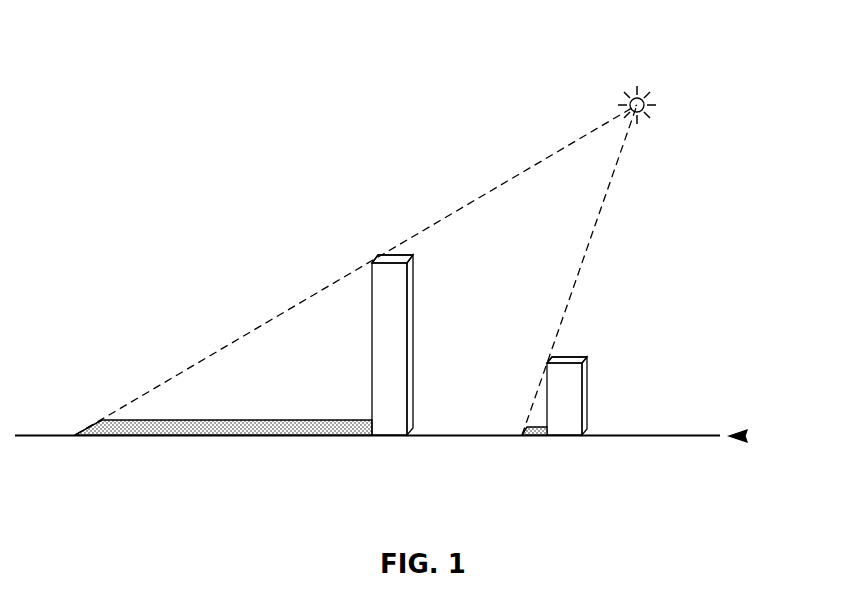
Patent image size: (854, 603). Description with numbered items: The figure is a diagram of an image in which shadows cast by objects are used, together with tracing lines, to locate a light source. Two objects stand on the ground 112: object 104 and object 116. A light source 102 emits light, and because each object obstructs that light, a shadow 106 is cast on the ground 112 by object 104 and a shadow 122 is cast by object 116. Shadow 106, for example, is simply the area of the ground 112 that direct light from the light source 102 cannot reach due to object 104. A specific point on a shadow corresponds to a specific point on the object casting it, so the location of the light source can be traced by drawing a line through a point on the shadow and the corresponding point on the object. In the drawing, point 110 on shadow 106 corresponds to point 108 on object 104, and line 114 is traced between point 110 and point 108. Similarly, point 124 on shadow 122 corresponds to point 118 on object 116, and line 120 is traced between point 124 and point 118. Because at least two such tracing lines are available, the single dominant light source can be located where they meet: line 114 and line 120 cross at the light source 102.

The light source 102 is at (642, 92).
The object 104 is at (392, 310).
The shadow 106 is at (258, 437).
The point 108 is at (372, 263).
The point 110 is at (75, 437).
The ground 112 is at (746, 434).
The line 114 is at (226, 350).
The object 116 is at (570, 397).
The point 118 is at (547, 363).
The line 120 is at (577, 283).
The shadow 122 is at (533, 437).
The point 124 is at (522, 437).